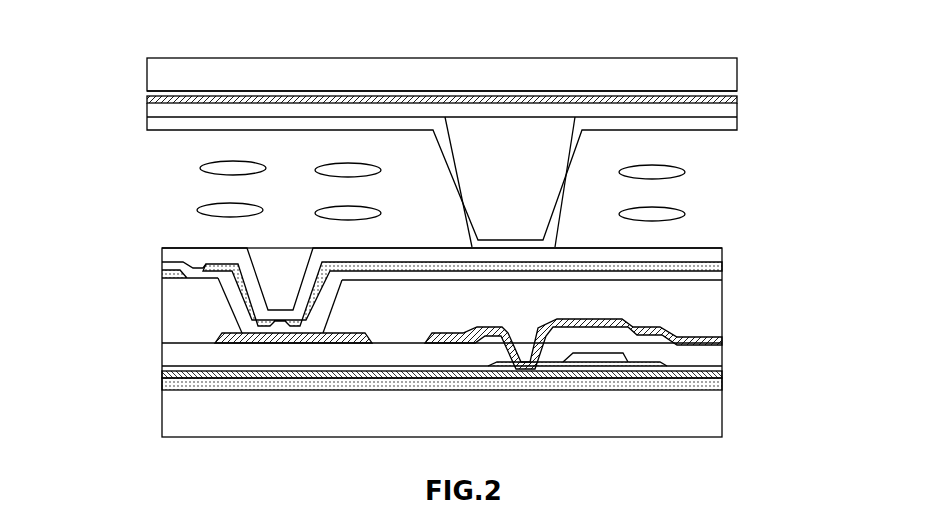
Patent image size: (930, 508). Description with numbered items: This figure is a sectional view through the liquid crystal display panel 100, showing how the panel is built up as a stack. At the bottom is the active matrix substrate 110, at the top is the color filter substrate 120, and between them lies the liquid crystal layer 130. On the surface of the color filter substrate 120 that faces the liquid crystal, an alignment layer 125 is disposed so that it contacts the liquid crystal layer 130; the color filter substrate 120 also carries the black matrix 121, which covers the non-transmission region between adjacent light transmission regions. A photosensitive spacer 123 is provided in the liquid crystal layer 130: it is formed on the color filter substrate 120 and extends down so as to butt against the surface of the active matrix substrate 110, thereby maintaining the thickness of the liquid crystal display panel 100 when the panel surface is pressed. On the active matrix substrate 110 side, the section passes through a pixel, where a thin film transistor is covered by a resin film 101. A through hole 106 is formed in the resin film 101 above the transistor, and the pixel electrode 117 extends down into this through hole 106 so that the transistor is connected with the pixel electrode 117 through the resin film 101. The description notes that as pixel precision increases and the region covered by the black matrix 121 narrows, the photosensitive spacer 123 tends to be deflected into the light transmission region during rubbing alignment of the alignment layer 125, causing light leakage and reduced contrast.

The liquid crystal display panel 100 is at (812, 112).
The active matrix substrate 110 is at (745, 247).
The color filter substrate 120 is at (747, 58).
The liquid crystal layer 130 is at (740, 148).
The black matrix 121 is at (645, 98).
The photosensitive spacer 123 is at (517, 178).
The alignment layer 125 is at (380, 128).
The resin film 101 is at (178, 310).
The through hole 106 is at (273, 280).
The pixel electrode 117 is at (242, 274).